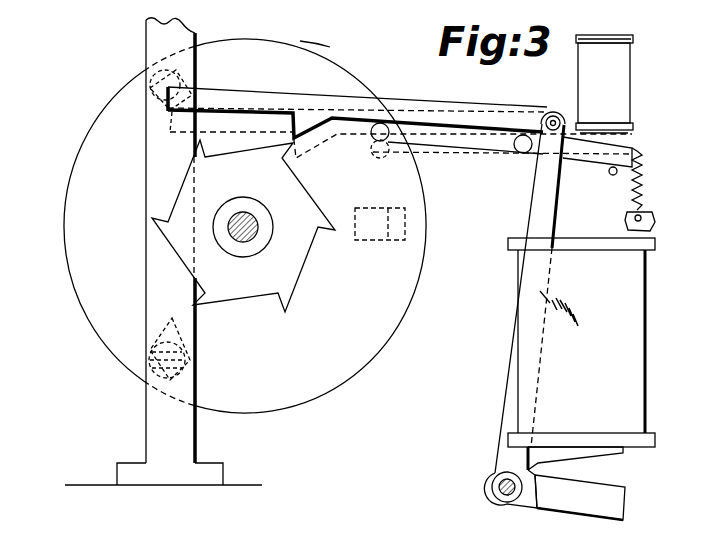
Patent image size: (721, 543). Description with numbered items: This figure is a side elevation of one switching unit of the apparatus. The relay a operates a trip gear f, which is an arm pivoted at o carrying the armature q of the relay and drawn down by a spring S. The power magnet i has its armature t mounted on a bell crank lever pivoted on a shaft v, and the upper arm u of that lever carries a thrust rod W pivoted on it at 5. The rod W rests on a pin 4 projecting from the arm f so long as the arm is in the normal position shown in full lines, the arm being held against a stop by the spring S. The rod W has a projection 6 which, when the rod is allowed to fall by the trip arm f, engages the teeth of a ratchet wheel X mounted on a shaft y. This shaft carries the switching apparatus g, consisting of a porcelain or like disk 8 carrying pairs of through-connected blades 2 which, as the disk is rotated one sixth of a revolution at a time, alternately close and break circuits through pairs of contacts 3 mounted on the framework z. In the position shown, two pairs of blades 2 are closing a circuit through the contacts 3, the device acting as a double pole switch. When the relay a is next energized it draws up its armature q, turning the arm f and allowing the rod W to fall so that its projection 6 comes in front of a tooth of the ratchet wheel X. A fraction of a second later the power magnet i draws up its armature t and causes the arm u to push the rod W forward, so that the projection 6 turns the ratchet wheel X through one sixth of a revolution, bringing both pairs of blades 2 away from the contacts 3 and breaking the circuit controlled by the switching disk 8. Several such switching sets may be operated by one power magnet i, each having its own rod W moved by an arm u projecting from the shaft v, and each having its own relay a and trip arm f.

The switching apparatus g is at (245, 212).
The disk 8 is at (307, 57).
The ratchet wheel X is at (283, 267).
The shaft y is at (258, 233).
The framework z is at (150, 442).
The thrust rod W is at (417, 108).
The projection 6 is at (305, 122).
The trip gear f is at (453, 133).
The pin 4 is at (378, 124).
The pivot o is at (524, 146).
The pivot 5 is at (554, 115).
The upper arm u is at (543, 197).
The armature q is at (640, 153).
The pin r is at (613, 176).
The spring S is at (640, 190).
The relay a is at (629, 75).
The power magnet i is at (633, 324).
The shaft v is at (495, 488).
The armature t is at (617, 503).
The blades 2 is at (395, 227).
The contacts 3 is at (143, 375).